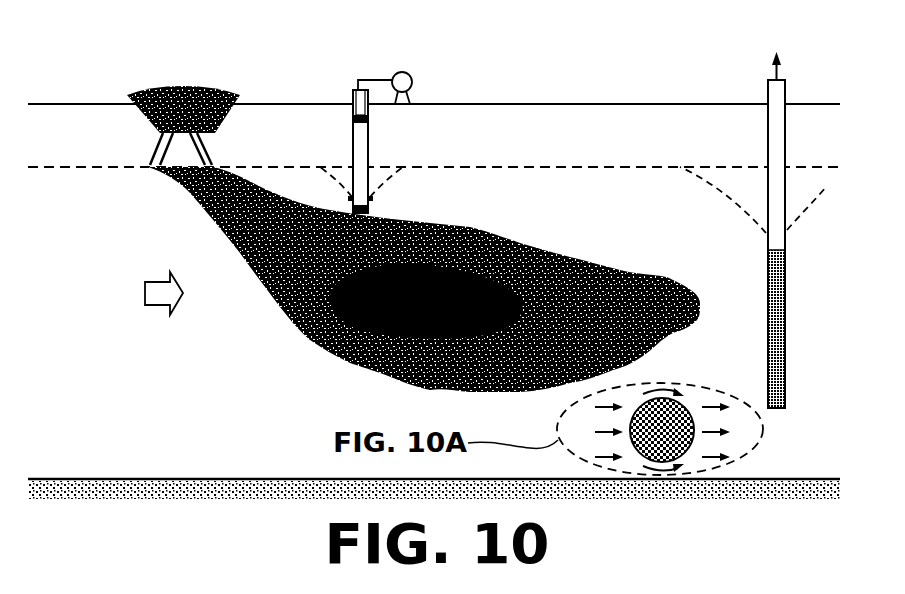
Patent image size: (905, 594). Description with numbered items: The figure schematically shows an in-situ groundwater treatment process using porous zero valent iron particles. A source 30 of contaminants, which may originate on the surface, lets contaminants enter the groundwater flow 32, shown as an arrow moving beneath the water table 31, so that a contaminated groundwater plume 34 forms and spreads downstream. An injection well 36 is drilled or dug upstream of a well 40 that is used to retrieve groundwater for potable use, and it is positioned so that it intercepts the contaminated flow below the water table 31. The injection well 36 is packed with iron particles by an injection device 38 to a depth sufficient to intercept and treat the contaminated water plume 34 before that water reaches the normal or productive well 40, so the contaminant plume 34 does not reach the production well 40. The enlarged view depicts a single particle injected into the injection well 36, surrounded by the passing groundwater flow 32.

The source 30 is at (205, 87).
The water table 31 is at (472, 166).
The groundwater flow 32 is at (170, 279).
The contaminated groundwater plume 34 is at (375, 373).
The injection well 36 is at (368, 135).
The injection device 38 is at (408, 73).
The well 40 is at (785, 147).